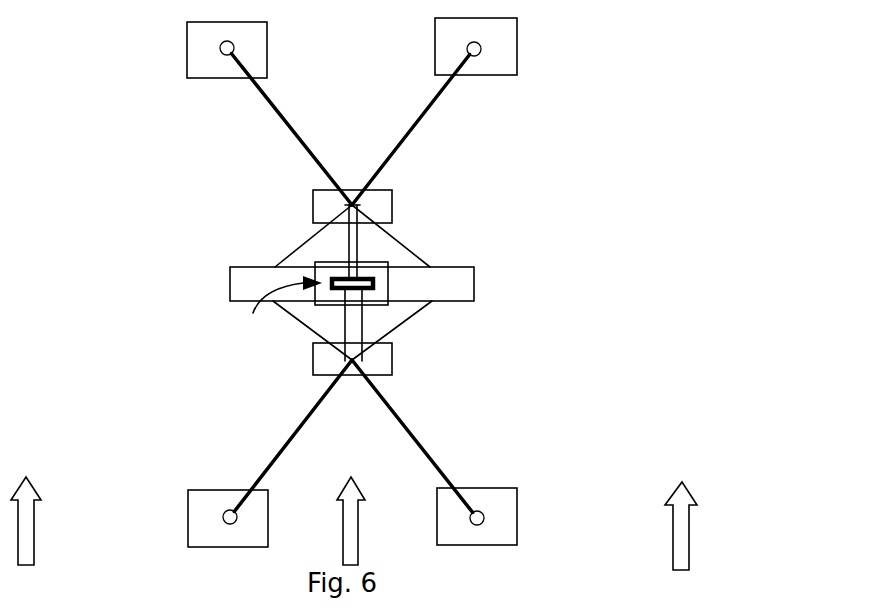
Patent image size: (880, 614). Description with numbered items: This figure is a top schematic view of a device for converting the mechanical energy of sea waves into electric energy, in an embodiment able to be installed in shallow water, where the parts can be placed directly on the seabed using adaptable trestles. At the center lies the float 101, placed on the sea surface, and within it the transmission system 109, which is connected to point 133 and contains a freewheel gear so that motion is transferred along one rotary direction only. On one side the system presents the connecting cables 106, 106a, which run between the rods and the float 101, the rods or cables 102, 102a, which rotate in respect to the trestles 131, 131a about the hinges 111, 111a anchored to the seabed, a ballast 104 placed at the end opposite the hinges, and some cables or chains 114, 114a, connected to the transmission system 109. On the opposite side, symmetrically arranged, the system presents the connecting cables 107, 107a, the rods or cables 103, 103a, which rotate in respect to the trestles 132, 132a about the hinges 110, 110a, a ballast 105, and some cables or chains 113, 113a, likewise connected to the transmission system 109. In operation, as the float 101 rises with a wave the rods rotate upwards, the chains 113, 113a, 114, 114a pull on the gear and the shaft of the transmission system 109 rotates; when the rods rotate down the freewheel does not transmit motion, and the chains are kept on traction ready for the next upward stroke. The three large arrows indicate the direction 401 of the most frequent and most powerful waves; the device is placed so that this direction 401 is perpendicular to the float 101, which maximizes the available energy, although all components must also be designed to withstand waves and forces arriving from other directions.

The float 101 is at (228, 283).
The rod 102 is at (302, 147).
The rod 102a is at (395, 157).
The rod 103 is at (263, 468).
The rod 103a is at (428, 447).
The ballast 104 is at (352, 188).
The ballast 105 is at (353, 377).
The connecting cable 106 is at (308, 240).
The connecting cable 106a is at (400, 240).
The connecting cable 107 is at (318, 327).
The connecting cable 107a is at (402, 323).
The transmission system 109 is at (279, 309).
The hinge 110 is at (220, 512).
The hinge 110a is at (487, 513).
The hinge 111 is at (220, 57).
The hinge 111a is at (483, 57).
The chain 113 is at (338, 320).
The chain 113a is at (363, 310).
The chain 114 is at (348, 252).
The chain 114a is at (358, 253).
The trestle 131 is at (185, 28).
The trestle 131a is at (518, 28).
The trestle 132 is at (188, 525).
The trestle 132a is at (520, 528).
The point 133 is at (388, 284).
The wave direction 401 is at (49, 505).